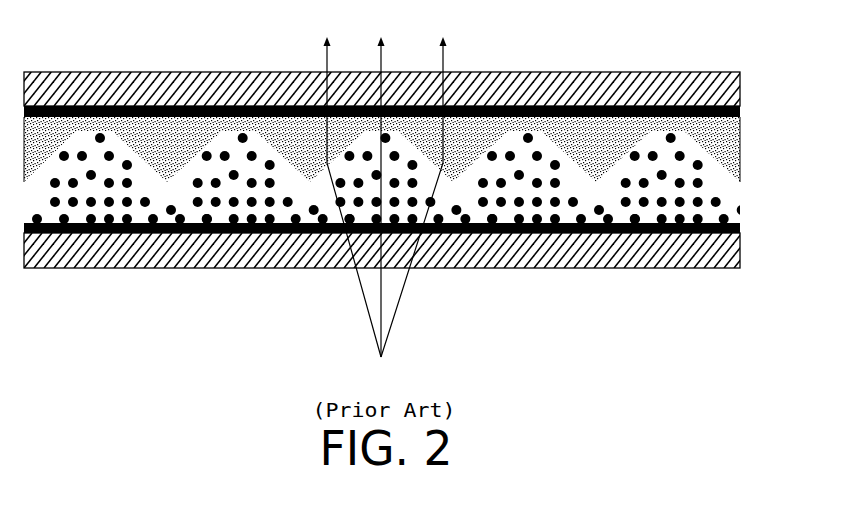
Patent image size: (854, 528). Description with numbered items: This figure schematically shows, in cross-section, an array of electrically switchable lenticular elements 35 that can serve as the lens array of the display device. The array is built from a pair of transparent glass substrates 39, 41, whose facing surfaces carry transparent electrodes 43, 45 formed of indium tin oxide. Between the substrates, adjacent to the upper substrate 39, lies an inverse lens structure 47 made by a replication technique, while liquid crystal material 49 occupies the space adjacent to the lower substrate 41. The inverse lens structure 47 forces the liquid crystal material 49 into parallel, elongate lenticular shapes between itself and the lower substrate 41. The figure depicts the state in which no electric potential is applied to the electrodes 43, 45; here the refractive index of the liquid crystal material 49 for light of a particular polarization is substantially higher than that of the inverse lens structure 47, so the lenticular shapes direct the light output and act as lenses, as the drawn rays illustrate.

The electrically switchable lenticular elements 35 is at (200, 147).
The upper transparent glass substrate 39 is at (122, 90).
The lower transparent glass substrate 41 is at (73, 252).
The transparent electrode 43 is at (712, 108).
The transparent electrode 45 is at (698, 233).
The inverse lens structure 47 is at (40, 125).
The liquid crystal material 49 is at (670, 138).